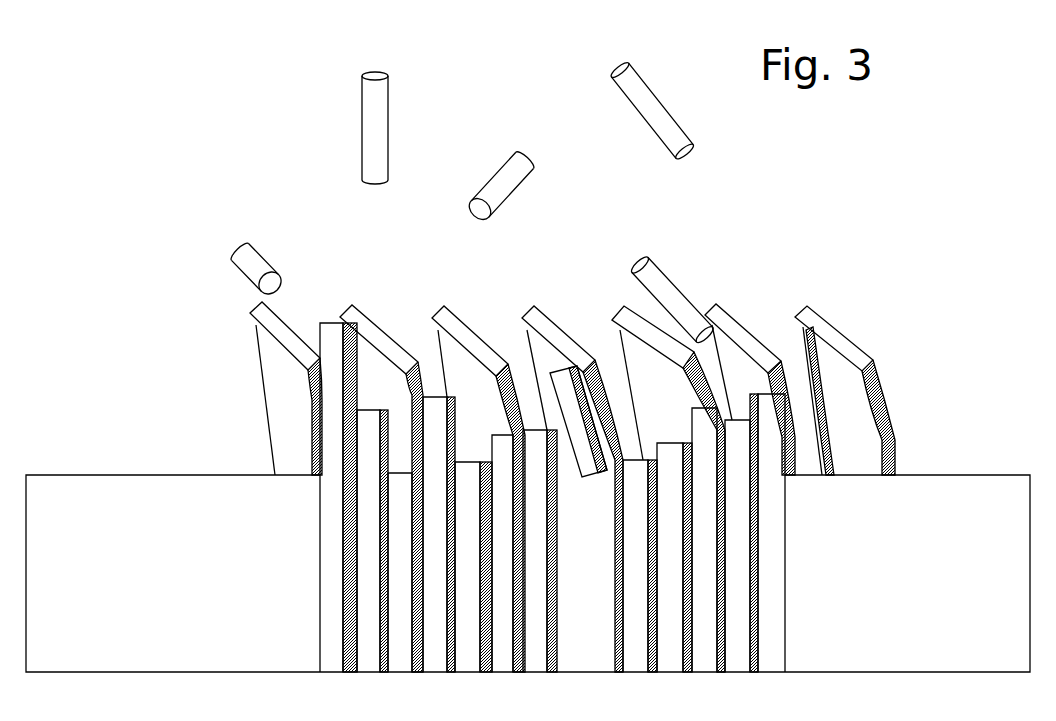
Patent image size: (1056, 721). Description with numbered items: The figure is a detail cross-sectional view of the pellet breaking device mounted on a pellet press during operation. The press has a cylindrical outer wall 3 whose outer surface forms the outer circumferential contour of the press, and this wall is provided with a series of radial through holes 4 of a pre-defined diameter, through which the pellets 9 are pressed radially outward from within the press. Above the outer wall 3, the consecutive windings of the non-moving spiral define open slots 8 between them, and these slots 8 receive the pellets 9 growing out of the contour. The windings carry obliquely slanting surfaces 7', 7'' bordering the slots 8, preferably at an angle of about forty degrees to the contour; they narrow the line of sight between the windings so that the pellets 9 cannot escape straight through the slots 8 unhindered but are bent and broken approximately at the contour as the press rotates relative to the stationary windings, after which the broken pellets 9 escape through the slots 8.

The cylindrical outer wall 3 is at (186, 477).
The radial through holes 4 is at (380, 477).
The obliquely slanting surface 7' is at (589, 427).
The obliquely slanting surface 7'' is at (280, 388).
The open slots 8 is at (590, 325).
The pellets 9 is at (492, 162).